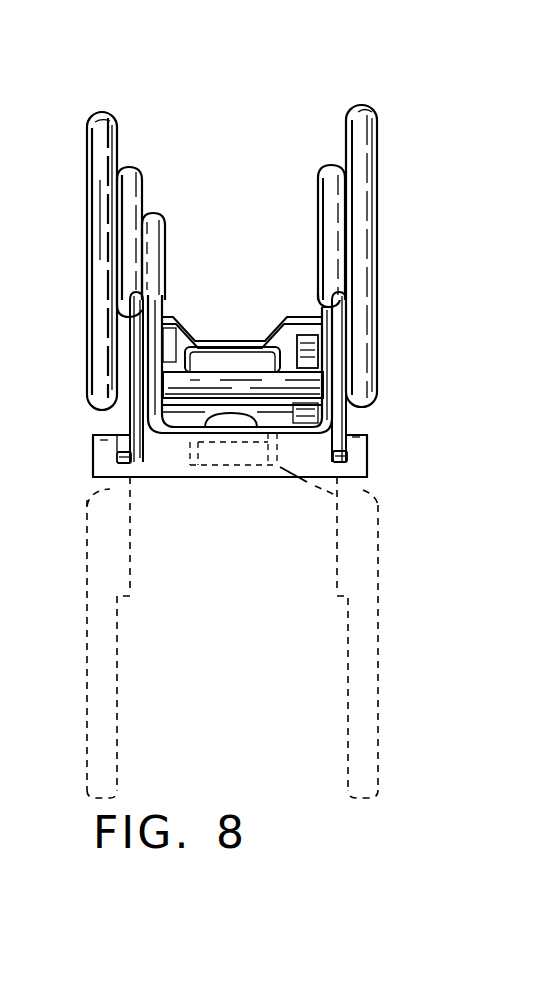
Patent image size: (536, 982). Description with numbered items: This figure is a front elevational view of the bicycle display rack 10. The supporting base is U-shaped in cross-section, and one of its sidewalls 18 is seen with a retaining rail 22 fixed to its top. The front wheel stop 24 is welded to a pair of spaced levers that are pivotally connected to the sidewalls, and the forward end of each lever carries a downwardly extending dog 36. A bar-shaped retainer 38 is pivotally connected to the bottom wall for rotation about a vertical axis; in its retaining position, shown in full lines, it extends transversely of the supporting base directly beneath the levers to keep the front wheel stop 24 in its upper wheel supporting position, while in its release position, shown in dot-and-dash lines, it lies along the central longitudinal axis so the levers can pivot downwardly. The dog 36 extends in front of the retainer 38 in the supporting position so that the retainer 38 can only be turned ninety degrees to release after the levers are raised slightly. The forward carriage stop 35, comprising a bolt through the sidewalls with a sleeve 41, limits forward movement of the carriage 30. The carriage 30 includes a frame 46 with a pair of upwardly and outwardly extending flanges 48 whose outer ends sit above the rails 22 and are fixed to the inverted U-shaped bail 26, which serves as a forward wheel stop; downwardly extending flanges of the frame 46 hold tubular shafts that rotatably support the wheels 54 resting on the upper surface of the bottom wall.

The rack 10 is at (294, 98).
The sidewall 18 is at (133, 296).
The retaining rail 22 is at (308, 330).
The front wheel stop 24 is at (370, 112).
The bail 26 is at (340, 243).
The carriage 30 is at (208, 300).
The forward carriage stop 35 is at (148, 405).
The dog 36 is at (127, 452).
The retainer 38 is at (357, 470).
The sleeve 41 is at (317, 385).
The frame 46 is at (248, 330).
The flange 48 is at (142, 322).
The wheel 54 is at (312, 357).